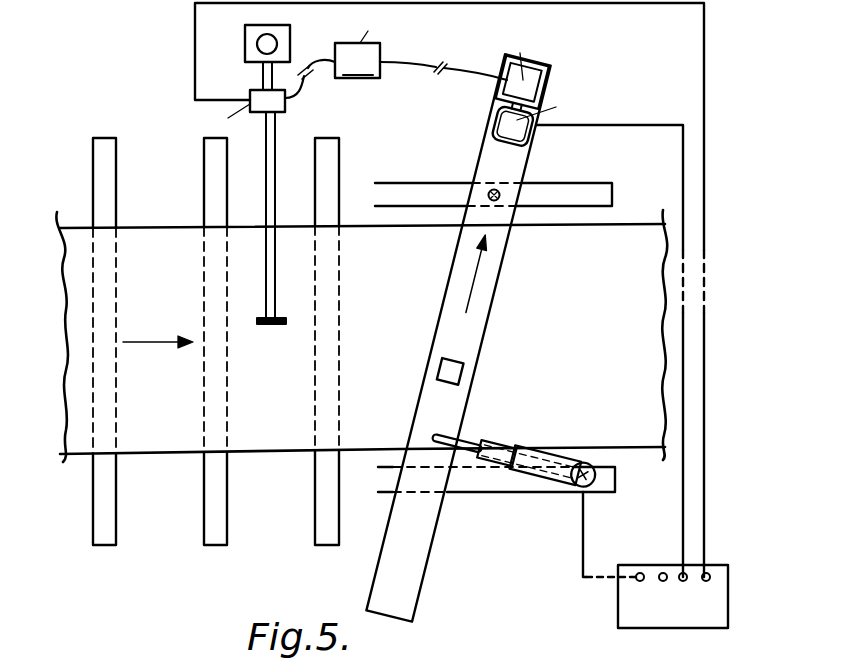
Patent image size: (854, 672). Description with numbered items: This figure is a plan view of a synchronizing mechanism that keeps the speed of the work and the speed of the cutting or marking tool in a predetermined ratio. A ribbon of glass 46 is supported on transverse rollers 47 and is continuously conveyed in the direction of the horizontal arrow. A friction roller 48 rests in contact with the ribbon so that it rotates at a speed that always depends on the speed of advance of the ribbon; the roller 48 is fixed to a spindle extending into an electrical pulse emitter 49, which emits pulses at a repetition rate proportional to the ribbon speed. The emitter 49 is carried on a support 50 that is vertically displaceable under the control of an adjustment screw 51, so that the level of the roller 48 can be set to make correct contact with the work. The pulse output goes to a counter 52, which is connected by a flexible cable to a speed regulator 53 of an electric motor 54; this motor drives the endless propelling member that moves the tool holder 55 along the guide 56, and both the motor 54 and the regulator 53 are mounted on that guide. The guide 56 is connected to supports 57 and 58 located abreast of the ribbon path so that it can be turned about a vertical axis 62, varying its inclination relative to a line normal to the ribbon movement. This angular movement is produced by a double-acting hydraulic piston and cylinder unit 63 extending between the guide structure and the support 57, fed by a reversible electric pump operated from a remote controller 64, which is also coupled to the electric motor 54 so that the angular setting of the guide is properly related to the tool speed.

The ribbon of glass 46 is at (72, 328).
The transverse rollers 47 is at (103, 547).
The friction roller 48 is at (273, 326).
The electrical pulse emitter 49 is at (287, 105).
The support 50 is at (290, 35).
The adjustment screw 51 is at (247, 40).
The counter 52 is at (396, 53).
The speed regulator 53 is at (537, 67).
The electric motor 54 is at (511, 123).
The tool holder 55 is at (463, 370).
The guide 56 is at (500, 280).
The support 57 is at (488, 480).
The support 58 is at (530, 187).
The vertical axis 62 is at (491, 191).
The hydraulic piston and cylinder unit 63 is at (485, 440).
The remote controller 64 is at (618, 602).